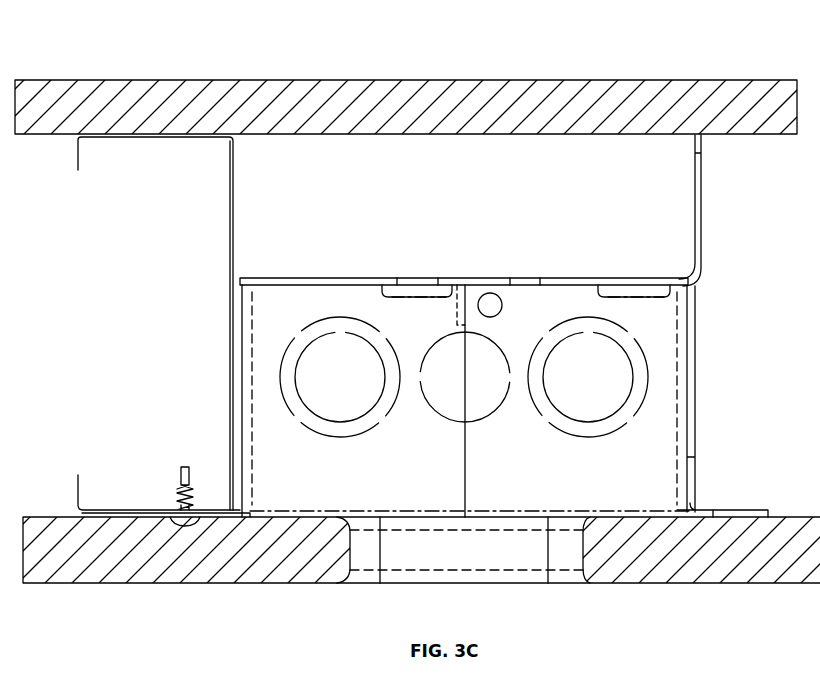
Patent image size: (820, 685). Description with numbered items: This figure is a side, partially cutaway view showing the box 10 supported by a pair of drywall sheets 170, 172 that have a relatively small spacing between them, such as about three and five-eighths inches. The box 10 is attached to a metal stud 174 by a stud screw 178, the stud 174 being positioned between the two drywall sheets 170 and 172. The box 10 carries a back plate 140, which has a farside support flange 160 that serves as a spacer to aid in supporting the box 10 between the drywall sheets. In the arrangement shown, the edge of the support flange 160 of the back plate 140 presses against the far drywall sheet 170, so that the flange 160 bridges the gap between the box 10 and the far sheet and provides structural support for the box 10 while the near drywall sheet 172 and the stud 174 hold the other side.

The box 10 is at (503, 353).
The back plate 140 is at (474, 258).
The support flange 160 is at (716, 196).
The drywall sheet 170 is at (281, 106).
The drywall sheet 172 is at (200, 569).
The metal stud 174 is at (117, 508).
The stud screw 178 is at (185, 466).